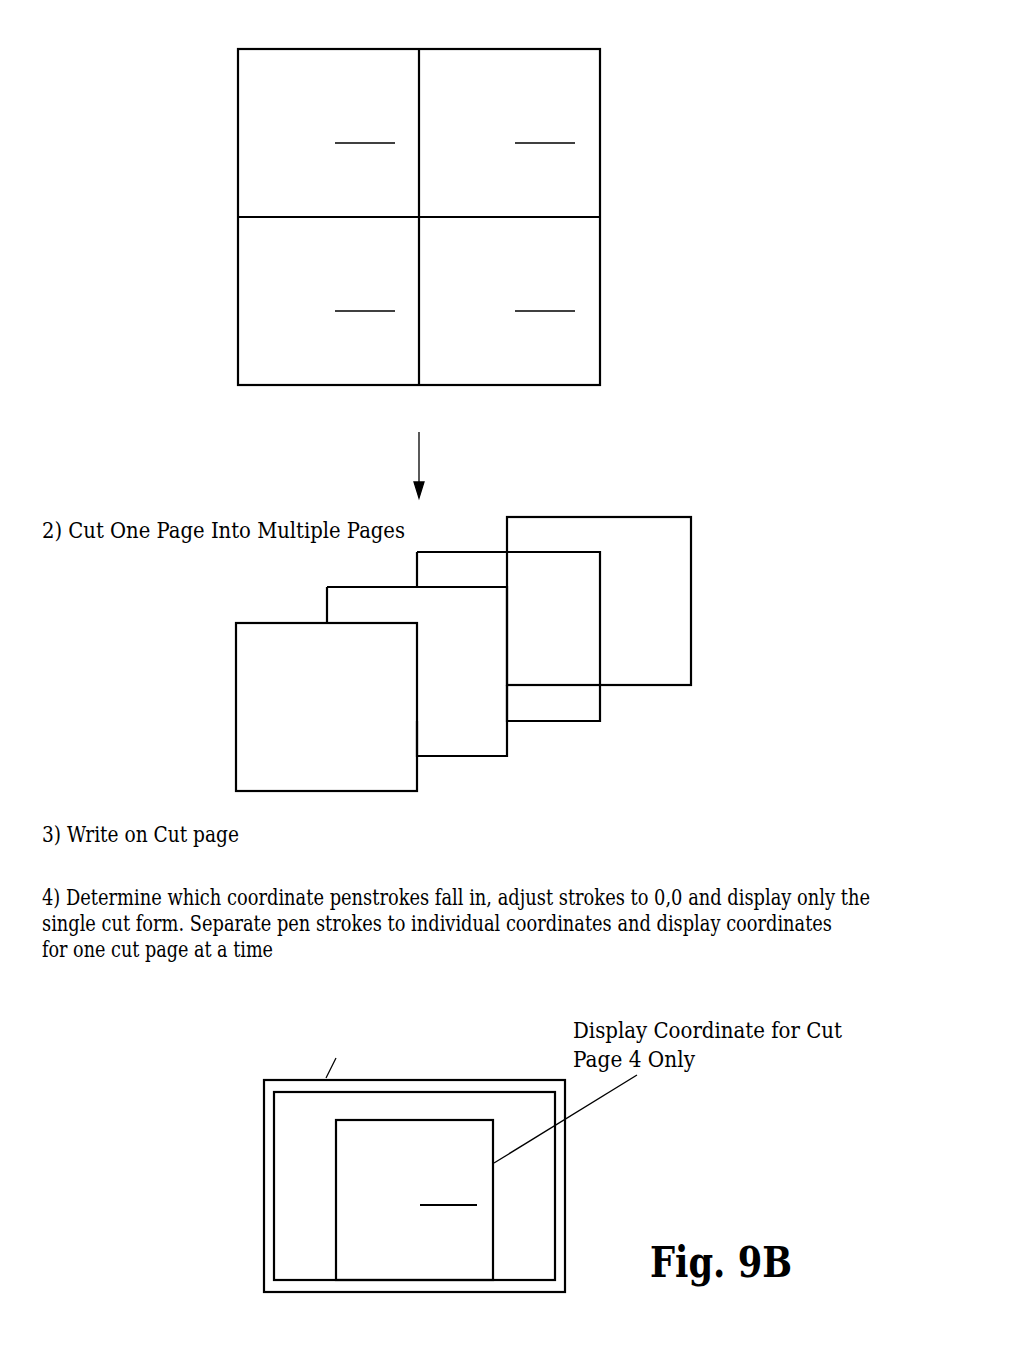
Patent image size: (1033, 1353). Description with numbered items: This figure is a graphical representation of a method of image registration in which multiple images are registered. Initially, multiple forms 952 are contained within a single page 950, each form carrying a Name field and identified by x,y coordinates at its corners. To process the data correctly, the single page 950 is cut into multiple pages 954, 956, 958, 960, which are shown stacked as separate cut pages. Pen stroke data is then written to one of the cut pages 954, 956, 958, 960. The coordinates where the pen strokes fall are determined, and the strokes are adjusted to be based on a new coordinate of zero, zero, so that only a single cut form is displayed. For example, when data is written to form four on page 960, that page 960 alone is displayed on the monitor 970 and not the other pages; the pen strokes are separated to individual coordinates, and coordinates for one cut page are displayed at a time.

The single page 950 is at (620, 46).
The forms 952 is at (258, 100).
The cut page 954 is at (287, 622).
The cut page 956 is at (337, 586).
The cut page 958 is at (477, 551).
The cut page 960 is at (617, 516).
The monitor 970 is at (258, 1072).